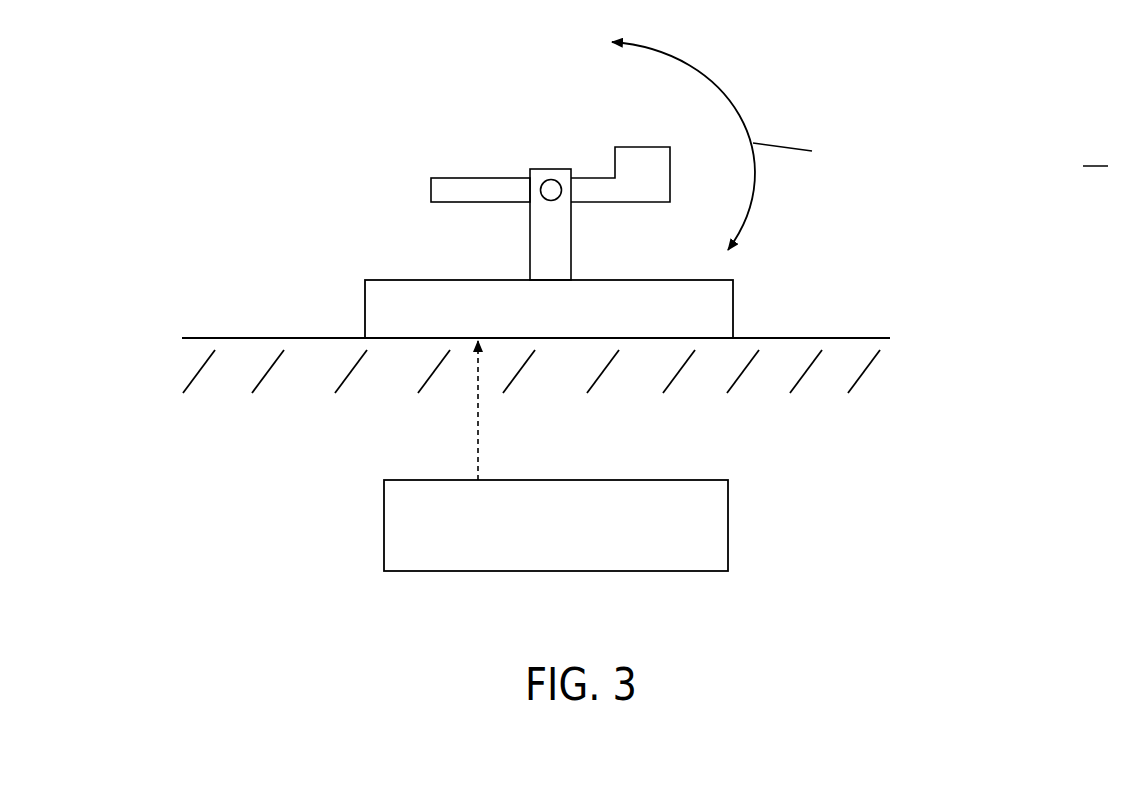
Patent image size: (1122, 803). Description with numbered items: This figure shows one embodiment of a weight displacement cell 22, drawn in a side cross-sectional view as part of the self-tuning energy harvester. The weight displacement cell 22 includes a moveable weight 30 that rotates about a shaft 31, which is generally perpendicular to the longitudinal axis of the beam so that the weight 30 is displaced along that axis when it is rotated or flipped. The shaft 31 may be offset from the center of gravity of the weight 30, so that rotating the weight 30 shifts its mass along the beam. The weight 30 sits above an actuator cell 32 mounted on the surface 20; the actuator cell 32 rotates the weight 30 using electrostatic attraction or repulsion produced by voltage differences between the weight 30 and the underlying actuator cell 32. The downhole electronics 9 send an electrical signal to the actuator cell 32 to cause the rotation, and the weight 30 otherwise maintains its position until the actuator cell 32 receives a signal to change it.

The weight displacement cell 22 is at (306, 127).
The moveable weight 30 is at (655, 189).
The shaft 31 is at (543, 202).
The actuator cell 32 is at (635, 322).
The downhole tool body / surface 20 is at (572, 384).
The downhole electronics 9 is at (710, 536).